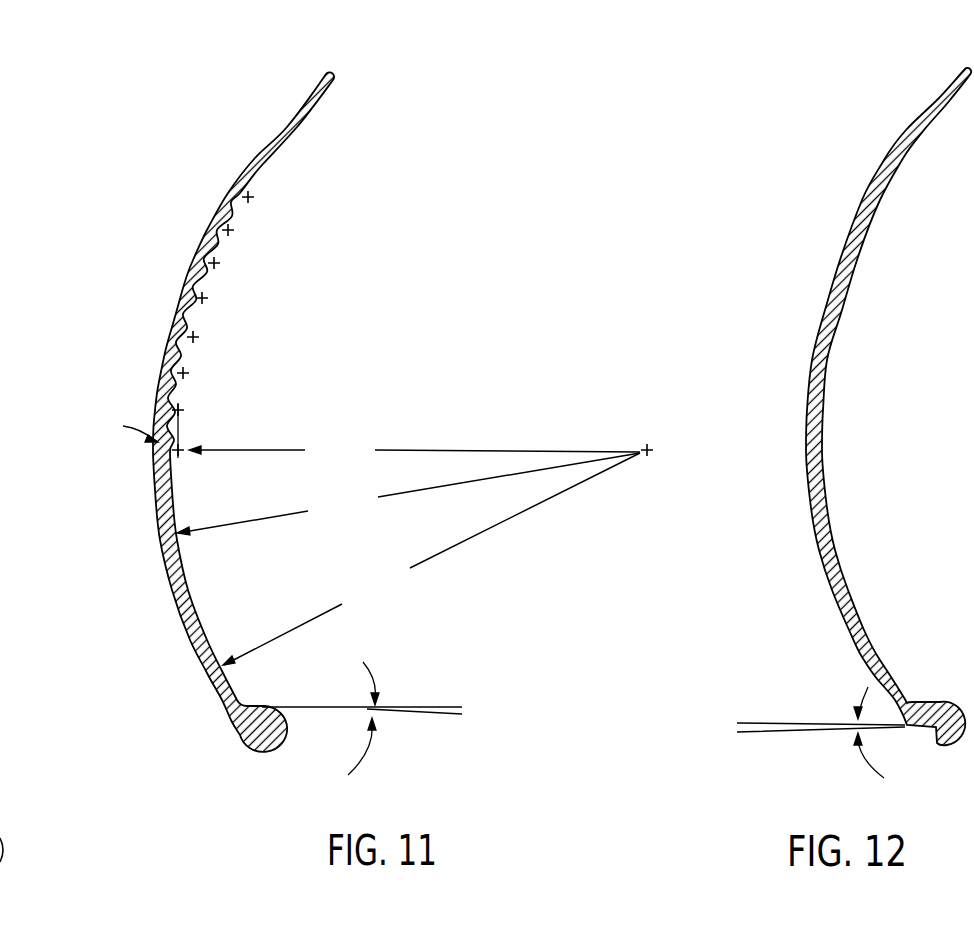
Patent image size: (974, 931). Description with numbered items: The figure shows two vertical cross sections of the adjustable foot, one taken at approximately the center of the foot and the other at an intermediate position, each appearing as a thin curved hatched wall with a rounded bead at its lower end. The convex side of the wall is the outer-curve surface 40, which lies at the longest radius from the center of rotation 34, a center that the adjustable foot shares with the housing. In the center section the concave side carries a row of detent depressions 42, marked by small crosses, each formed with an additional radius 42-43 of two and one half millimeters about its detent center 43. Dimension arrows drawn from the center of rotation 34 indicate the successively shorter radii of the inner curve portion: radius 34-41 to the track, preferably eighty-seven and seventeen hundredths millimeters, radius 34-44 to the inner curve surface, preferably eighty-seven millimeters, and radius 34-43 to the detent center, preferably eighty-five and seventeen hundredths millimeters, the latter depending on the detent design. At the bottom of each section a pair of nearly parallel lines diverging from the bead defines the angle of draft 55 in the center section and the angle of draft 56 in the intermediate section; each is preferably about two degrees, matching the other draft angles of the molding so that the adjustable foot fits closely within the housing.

In FIG. 11, the outer-curve surface 40 is at (170, 309).
In FIG. 11, the detent depressions 42 is at (240, 223).
In FIG. 11, the detent center 43 is at (222, 258).
In FIG. 11, the detent depression radius 42-43 is at (150, 442).
In FIG. 11, the center of rotation 34 is at (652, 456).
In FIG. 11, the radius to detent center 34-43 is at (414, 450).
In FIG. 11, the radius to track 34-41 is at (408, 494).
In FIG. 11, the radius to inner curve surface 34-44 is at (431, 559).
In FIG. 11, the angle of draft 55 is at (366, 745).
In FIG. 12, the angle of draft 56 is at (866, 763).